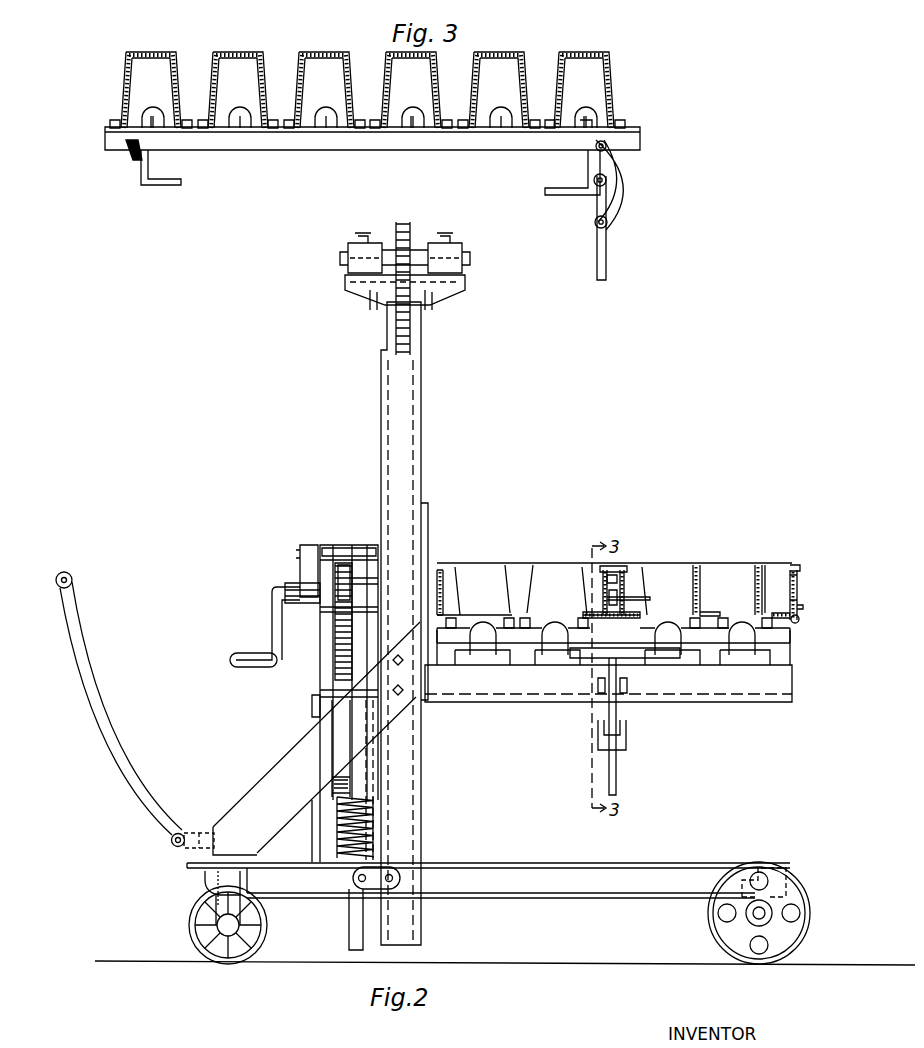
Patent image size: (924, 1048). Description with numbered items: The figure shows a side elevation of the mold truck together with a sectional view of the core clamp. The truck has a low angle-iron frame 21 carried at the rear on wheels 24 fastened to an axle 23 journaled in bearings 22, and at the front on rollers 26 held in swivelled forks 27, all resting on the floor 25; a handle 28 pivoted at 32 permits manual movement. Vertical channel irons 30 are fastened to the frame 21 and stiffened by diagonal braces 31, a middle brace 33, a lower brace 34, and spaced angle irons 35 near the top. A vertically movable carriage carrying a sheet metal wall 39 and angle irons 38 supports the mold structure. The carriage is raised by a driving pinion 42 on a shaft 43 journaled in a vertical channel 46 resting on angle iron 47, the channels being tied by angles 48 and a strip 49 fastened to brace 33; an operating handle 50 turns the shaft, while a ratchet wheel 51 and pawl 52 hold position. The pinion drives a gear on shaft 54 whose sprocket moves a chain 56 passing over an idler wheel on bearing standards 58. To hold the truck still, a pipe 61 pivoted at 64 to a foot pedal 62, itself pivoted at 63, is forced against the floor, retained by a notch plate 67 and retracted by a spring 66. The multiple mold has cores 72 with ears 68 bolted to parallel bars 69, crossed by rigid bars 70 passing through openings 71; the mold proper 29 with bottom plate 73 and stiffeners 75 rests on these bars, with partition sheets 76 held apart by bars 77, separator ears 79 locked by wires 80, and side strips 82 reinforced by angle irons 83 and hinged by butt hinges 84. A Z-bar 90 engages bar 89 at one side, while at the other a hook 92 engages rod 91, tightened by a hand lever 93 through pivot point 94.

In FIG. 2, the frame 21 is at (609, 890).
In FIG. 2, the bearings 22 is at (772, 918).
In FIG. 2, the axle 23 is at (752, 918).
In FIG. 2, the wheels or rollers 24 is at (710, 925).
In FIG. 2, the floor 25 is at (525, 964).
In FIG. 2, the front supporting rollers 26 is at (212, 952).
In FIG. 2, the swivelled forks 27 is at (215, 914).
In FIG. 2, the handle 28 is at (132, 753).
In FIG. 2, the mold proper 29 is at (648, 582).
In FIG. 2, the vertical channel irons 30 is at (421, 836).
In FIG. 2, the stiffening braces 31 is at (252, 790).
In FIG. 2, the pivot 32 is at (181, 834).
In FIG. 2, the brace 33 is at (364, 543).
In FIG. 2, the brace 34 is at (378, 855).
In FIG. 2, the spaced angle irons 35 is at (385, 292).
In FIG. 2, the bars 38 is at (790, 683).
In FIG. 2, the sheet metal wall 39 is at (428, 536).
In FIG. 2, the driving pinion 42 is at (340, 562).
In FIG. 2, the shaft 43 is at (358, 582).
In FIG. 2, the vertical channel 46 is at (332, 810).
In FIG. 2, the angle iron 47 is at (313, 852).
In FIG. 2, the angles 48 is at (343, 562).
In FIG. 2, the sheet or strip 49 is at (338, 552).
In FIG. 2, the operating handle 50 is at (233, 654).
In FIG. 2, the ratchet wheel 51 is at (306, 604).
In FIG. 2, the pawl 52 is at (300, 570).
In FIG. 2, the shaft 54 is at (312, 706).
In FIG. 2, the chain 56 is at (412, 333).
In FIG. 2, the bearing standards 58 is at (350, 252).
In FIG. 2, the pipe or rod 61 is at (349, 922).
In FIG. 2, the foot operated pedal 62 is at (277, 880).
In FIG. 2, the pivot 63 is at (400, 884).
In FIG. 2, the pivot 64 is at (358, 882).
In FIG. 2, the spring 66 is at (378, 825).
In FIG. 2, the notch plate 67 is at (208, 880).
In FIG. 3, the ears 68 is at (461, 124).
In FIG. 2, the ears 68 is at (766, 618).
In FIG. 3, the parallel bars 69 is at (270, 140).
In FIG. 2, the parallel bars 69 is at (748, 660).
In FIG. 3, the rigid bars 70 is at (148, 118).
In FIG. 2, the rigid bars 70 is at (440, 630).
In FIG. 3, the openings 71 is at (594, 122).
In FIG. 3, the cores 72 is at (565, 55).
In FIG. 2, the cores 72 is at (720, 567).
In FIG. 2, the flat bottom plate 73 is at (785, 608).
In FIG. 2, the structural irons 75 is at (520, 622).
In FIG. 2, the spaced sheets 76 is at (522, 575).
In FIG. 2, the bars 77 is at (616, 566).
In FIG. 2, the ears 79 is at (605, 579).
In FIG. 2, the locking wires 80 is at (639, 586).
In FIG. 2, the strips 82 is at (798, 590).
In FIG. 2, the angle irons 83 is at (436, 566).
In FIG. 2, the butt hinges 84 is at (799, 621).
In FIG. 3, the bar 89 is at (148, 158).
In FIG. 3, the Z-bar 90 is at (128, 150).
In FIG. 3, the short rod 91 is at (608, 144).
In FIG. 2, the short rod 91 is at (585, 660).
In FIG. 3, the hook 92 is at (628, 178).
In FIG. 3, the hand lever 93 is at (597, 232).
In FIG. 2, the hand lever 93 is at (617, 766).
In FIG. 3, the pivot point 94 is at (608, 228).